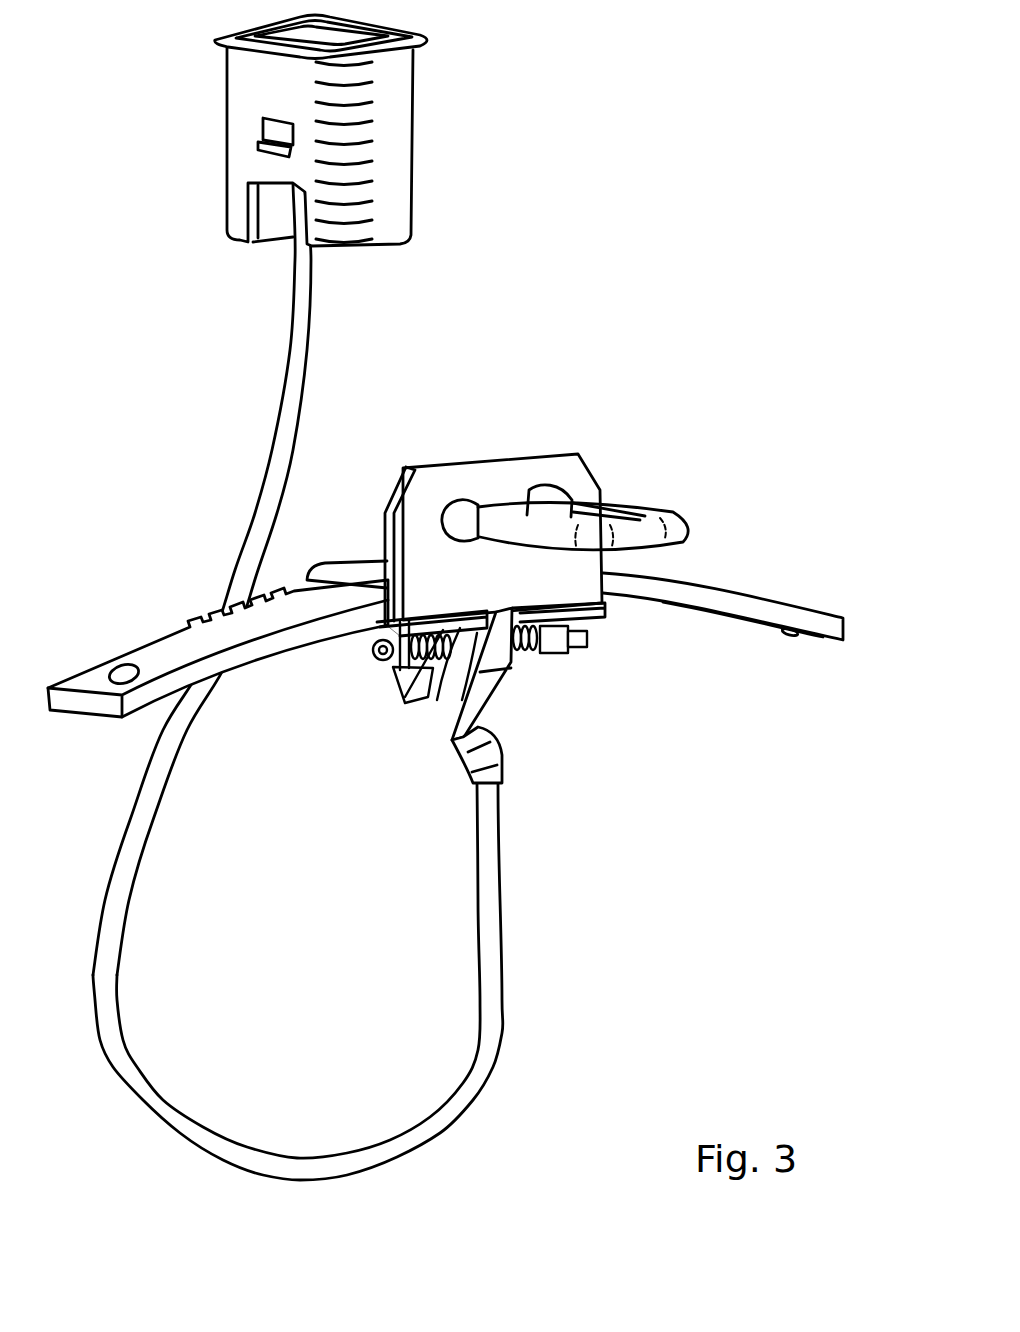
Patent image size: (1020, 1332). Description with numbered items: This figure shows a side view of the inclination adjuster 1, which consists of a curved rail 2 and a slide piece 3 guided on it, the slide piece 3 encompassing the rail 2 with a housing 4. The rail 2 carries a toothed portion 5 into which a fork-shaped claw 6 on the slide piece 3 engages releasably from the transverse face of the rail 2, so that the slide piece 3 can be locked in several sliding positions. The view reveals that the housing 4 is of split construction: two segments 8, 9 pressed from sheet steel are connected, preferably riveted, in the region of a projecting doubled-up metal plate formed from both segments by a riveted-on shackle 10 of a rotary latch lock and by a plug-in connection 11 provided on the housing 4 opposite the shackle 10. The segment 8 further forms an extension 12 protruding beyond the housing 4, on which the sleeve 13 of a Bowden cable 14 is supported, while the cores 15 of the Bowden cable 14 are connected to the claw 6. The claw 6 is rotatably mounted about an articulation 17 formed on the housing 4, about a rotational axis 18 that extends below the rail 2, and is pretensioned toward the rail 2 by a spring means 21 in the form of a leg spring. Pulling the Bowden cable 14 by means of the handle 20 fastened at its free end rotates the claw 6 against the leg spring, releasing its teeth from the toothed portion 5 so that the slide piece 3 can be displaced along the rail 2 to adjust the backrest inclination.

The inclination adjuster 1 is at (686, 252).
The rail 2 is at (207, 668).
The slide piece 3 is at (476, 568).
The housing 4 is at (574, 478).
The toothed portion 5 is at (196, 628).
The claw 6 is at (366, 650).
The segment pressed from sheet steel 8 is at (447, 481).
The segment pressed from sheet steel 9 is at (400, 487).
The shackle 10 is at (680, 522).
The plug-in connection 11 is at (573, 623).
The extension 12 is at (487, 698).
The sleeve 13 is at (492, 757).
The Bowden cable 14 is at (130, 975).
The cores 15 is at (420, 707).
The articulation 17 is at (375, 655).
The rotational axis 18 is at (312, 658).
The handle 20 is at (400, 128).
The spring means 21 is at (450, 693).